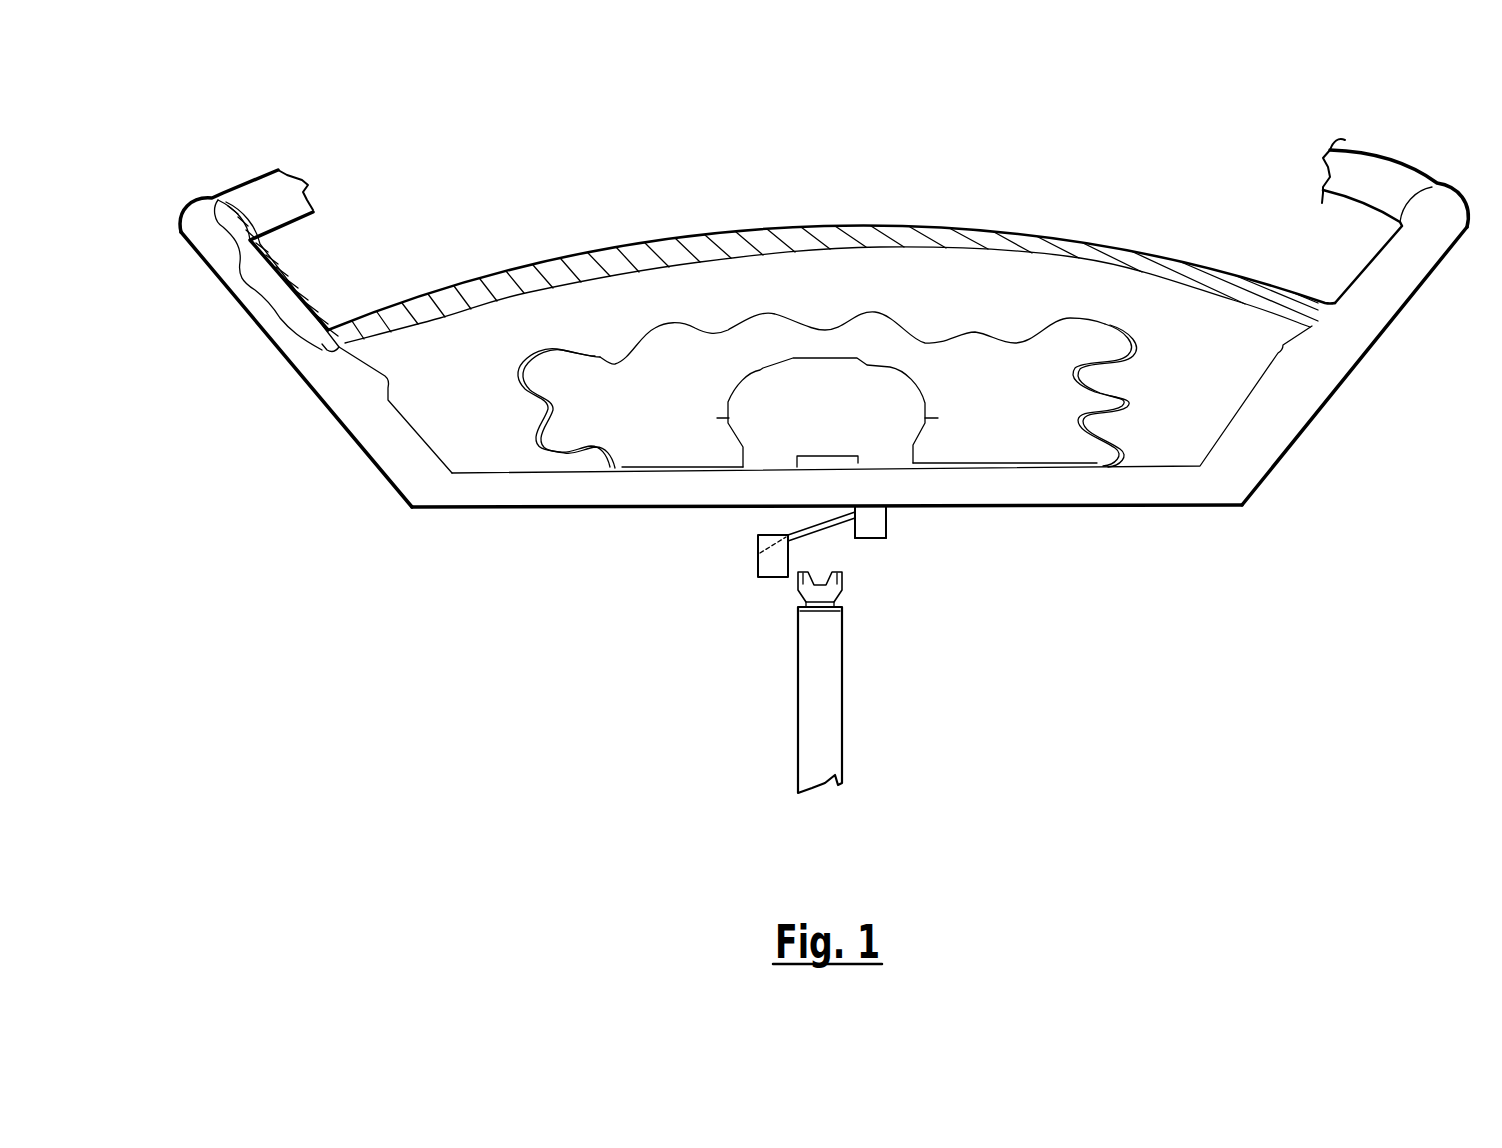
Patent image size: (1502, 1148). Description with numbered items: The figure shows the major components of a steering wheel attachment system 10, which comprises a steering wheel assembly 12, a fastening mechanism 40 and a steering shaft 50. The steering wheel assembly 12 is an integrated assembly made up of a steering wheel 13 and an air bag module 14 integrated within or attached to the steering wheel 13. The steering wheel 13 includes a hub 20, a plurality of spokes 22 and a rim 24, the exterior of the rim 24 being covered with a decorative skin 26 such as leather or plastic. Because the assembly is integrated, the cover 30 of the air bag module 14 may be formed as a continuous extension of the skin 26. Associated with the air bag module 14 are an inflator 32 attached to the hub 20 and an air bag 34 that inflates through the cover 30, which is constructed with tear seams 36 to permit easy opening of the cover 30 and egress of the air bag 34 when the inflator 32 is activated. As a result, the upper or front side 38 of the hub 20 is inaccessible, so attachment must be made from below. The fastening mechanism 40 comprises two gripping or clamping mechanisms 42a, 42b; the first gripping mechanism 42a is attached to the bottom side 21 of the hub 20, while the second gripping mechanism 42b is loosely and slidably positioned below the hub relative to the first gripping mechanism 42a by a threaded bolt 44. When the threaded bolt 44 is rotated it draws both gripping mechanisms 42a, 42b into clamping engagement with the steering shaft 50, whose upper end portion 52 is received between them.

The steering wheel attachment system 10 is at (467, 160).
The steering wheel assembly 12 is at (392, 302).
The steering wheel 13 is at (250, 268).
The air bag module 14 is at (698, 323).
The hub 20 is at (537, 498).
The bottom side of the hub 21 is at (640, 505).
The spokes 22 is at (330, 385).
The rim 24 is at (1400, 177).
The decorative skin 26 is at (282, 272).
The cover 30 is at (583, 267).
The inflator 32 is at (805, 419).
The air bag 34 is at (603, 360).
The tear seams 36 is at (797, 243).
The upper or front side of the hub 38 is at (1177, 465).
The fastening mechanism 40 is at (900, 519).
The first gripping mechanism 42a is at (866, 540).
The second gripping mechanism 42b is at (772, 579).
The threaded bolt 44 is at (808, 512).
The steering shaft 50 is at (864, 714).
The plug 52 is at (795, 583).